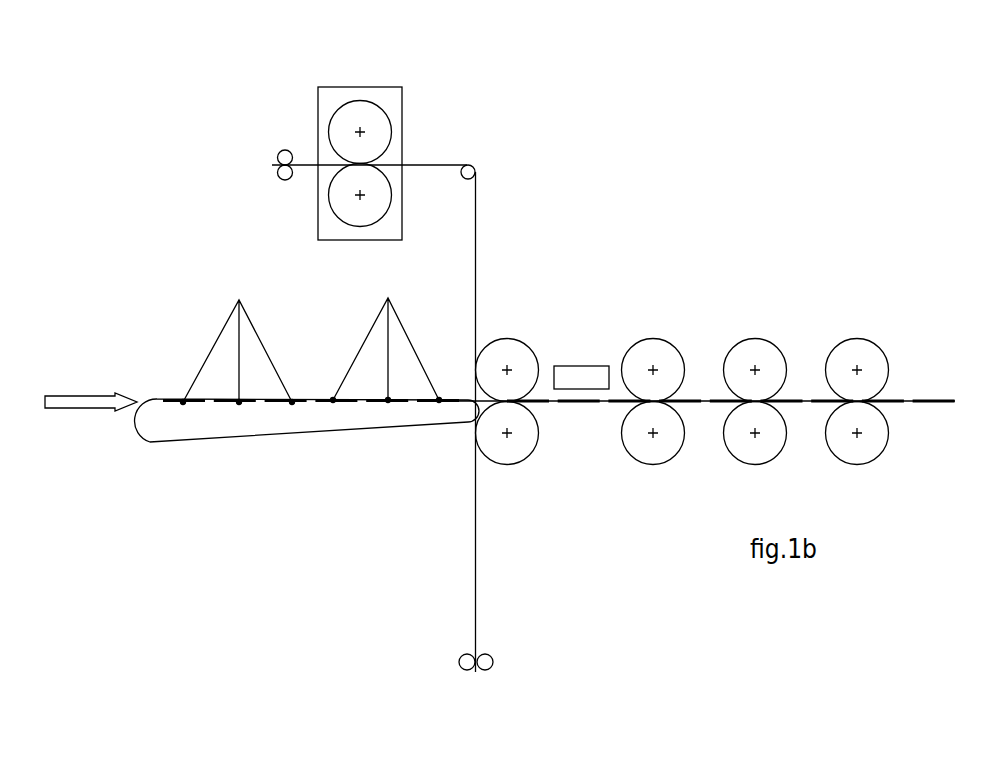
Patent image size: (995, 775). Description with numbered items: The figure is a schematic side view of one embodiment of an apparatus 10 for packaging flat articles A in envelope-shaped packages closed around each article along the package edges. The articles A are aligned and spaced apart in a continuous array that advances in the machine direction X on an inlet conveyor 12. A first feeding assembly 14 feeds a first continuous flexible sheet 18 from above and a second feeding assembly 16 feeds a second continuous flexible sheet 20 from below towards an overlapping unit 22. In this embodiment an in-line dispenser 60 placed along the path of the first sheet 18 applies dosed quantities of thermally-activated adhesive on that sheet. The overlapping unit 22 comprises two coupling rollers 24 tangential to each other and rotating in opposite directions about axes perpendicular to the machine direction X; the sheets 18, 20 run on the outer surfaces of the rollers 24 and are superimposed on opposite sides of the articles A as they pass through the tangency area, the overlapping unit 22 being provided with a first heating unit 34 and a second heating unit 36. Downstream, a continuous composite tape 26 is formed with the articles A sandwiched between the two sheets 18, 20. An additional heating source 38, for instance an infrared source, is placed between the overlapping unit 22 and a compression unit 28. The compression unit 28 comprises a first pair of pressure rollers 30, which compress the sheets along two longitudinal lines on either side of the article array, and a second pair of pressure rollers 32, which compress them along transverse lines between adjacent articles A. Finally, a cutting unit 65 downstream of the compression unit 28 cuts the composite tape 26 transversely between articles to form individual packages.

The apparatus for packaging flat articles 10 is at (733, 113).
The inlet conveyor 12 is at (145, 443).
The first feeding assembly 14 is at (275, 145).
The second feeding assembly 16 is at (495, 662).
The first continuous flexible sheet 18 is at (476, 254).
The second continuous flexible sheet 20 is at (476, 507).
The overlapping unit 22 is at (542, 367).
The coupling rollers 24 is at (520, 360).
The continuous composite tape 26 is at (717, 402).
The compression unit 28 is at (777, 303).
The first pair of pressure rollers 30 is at (681, 421).
The second pair of pressure rollers 32 is at (779, 417).
The first heating unit 34 is at (474, 362).
The second heating unit 36 is at (474, 436).
The additional heating source 38 is at (600, 366).
The in-line dispenser 60 is at (402, 122).
The cutting unit 65 is at (881, 417).
The machine direction X is at (82, 400).
The flat articles A is at (311, 334).